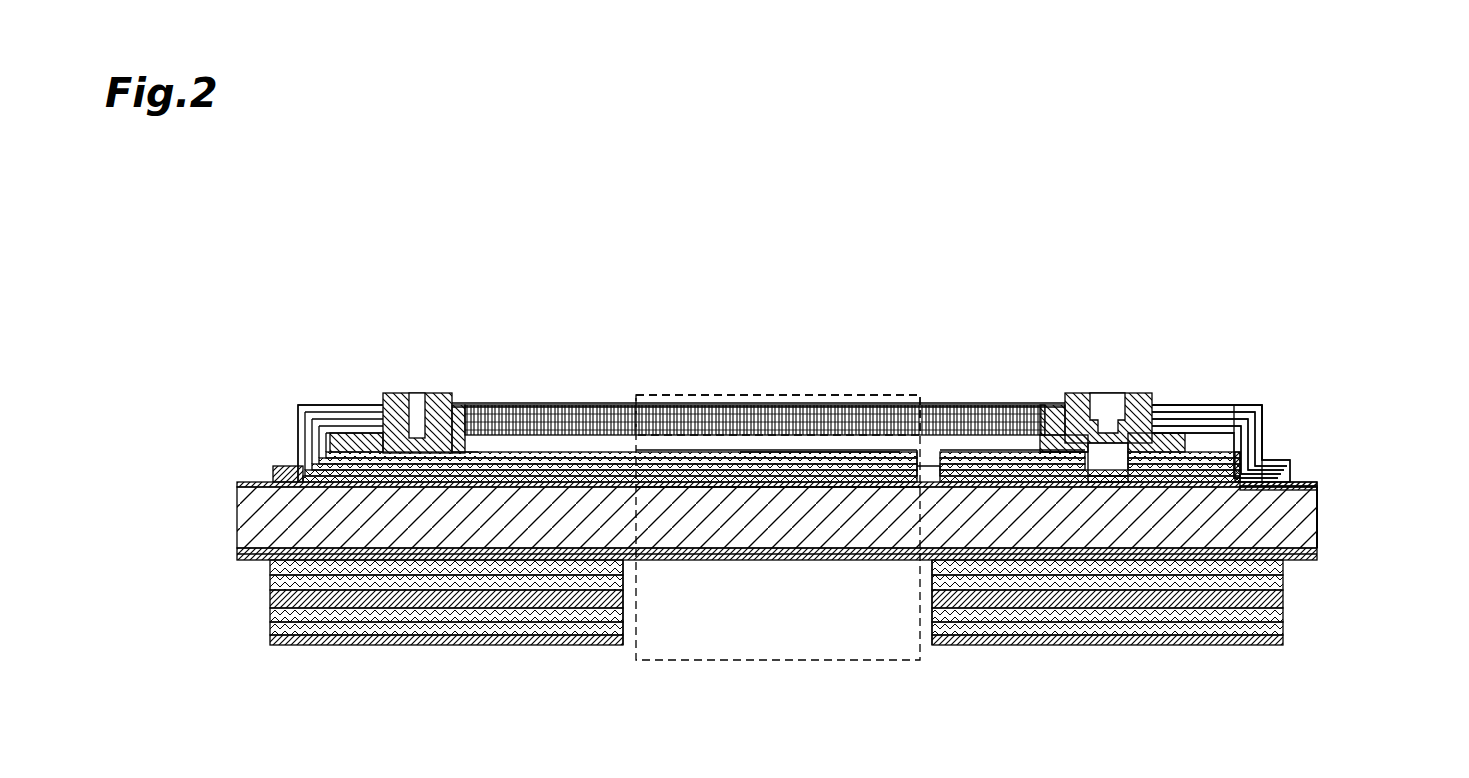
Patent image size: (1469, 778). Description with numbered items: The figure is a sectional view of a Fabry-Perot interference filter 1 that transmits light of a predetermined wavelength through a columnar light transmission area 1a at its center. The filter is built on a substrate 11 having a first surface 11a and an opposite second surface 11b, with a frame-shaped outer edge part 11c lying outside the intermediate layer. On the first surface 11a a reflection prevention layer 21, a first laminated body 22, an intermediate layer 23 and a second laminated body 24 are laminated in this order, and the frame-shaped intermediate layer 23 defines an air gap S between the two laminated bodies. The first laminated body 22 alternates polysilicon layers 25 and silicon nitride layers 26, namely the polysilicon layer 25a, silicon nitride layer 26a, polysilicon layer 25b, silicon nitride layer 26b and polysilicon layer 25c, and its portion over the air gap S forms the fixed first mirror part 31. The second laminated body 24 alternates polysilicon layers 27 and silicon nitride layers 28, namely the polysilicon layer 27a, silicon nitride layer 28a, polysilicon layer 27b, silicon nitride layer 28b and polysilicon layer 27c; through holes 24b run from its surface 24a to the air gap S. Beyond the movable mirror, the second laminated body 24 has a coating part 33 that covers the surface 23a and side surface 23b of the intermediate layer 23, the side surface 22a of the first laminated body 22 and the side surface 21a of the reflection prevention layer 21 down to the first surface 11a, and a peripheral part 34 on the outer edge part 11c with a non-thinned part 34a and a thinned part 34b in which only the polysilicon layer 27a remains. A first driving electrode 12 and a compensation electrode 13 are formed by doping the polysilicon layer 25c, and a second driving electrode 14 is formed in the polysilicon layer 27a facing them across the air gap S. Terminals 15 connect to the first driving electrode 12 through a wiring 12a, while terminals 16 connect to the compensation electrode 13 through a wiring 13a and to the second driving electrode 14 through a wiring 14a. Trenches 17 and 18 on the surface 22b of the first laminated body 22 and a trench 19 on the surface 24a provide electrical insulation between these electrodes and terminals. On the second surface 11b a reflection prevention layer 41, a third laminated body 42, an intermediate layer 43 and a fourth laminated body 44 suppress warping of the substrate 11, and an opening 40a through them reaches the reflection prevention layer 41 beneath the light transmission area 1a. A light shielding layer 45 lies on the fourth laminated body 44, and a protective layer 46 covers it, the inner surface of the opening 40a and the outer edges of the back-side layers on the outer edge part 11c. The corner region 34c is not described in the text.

The Fabry-Perot interference filter 1 is at (990, 303).
The light transmission area 1a is at (821, 662).
The substrate 11 is at (237, 520).
The first surface 11a is at (237, 484).
The second surface 11b is at (240, 560).
The outer edge part 11c is at (1312, 540).
The first driving electrode 12 is at (990, 447).
The wiring 12a is at (463, 456).
The compensation electrode 13 is at (780, 462).
The wiring 13a is at (1070, 456).
The second driving electrode 14 is at (594, 404).
The wiring 14a is at (1058, 434).
The terminal 15 is at (418, 392).
The terminal 16 is at (1108, 392).
The trench 17 is at (1150, 434).
The trench 18 is at (917, 440).
The trench 19 is at (362, 430).
The reflection prevention layer 21 is at (1108, 455).
The side surface 21a is at (1112, 476).
The first laminated body 22 is at (670, 394).
The side surface 22a is at (1238, 468).
The surface 22b is at (863, 452).
The intermediate layer 23 is at (1202, 405).
The surface 23a is at (1185, 404).
The side surface 23b is at (1262, 410).
The second laminated body 24 is at (883, 394).
The surface 24a is at (300, 408).
The through hole 24b is at (648, 404).
The polysilicon layer 25 is at (695, 397).
The polysilicon layer 25a is at (278, 478).
The polysilicon layer 25b is at (292, 466).
The polysilicon layer 25c is at (302, 452).
The silicon nitride layer 26 is at (695, 410).
The silicon nitride layer 26a is at (287, 472).
The silicon nitride layer 26b is at (298, 460).
The polysilicon layer 27 is at (1289, 399).
The polysilicon layer 27a is at (1284, 480).
The polysilicon layer 27b is at (1276, 468).
The polysilicon layer 27c is at (1268, 455).
The silicon nitride layer 28 is at (1289, 412).
The silicon nitride layer 28a is at (1280, 474).
The silicon nitride layer 28b is at (1272, 462).
The first mirror part 31 is at (761, 491).
The coating part 33 is at (1231, 399).
The peripheral part 34 is at (1342, 466).
The non-thinned part 34a is at (1310, 535).
The thinned part 34b is at (1318, 507).
The protective layer portion 34c is at (1262, 458).
The opening 40a is at (926, 575).
The reflection prevention layer 41 is at (1286, 572).
The third laminated body 42 is at (1286, 586).
The intermediate layer 43 is at (1286, 617).
The fourth laminated body 44 is at (1286, 632).
The light shielding layer 45 is at (1283, 645).
The protective layer 46 is at (1270, 648).
The air gap S is at (752, 400).